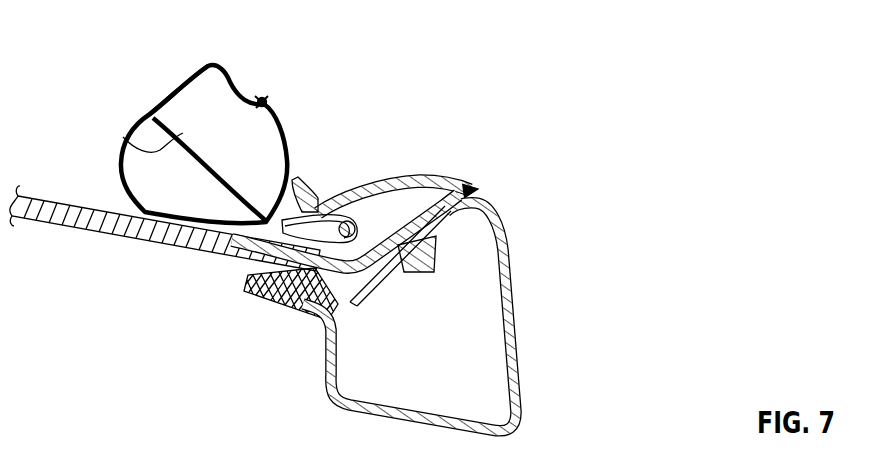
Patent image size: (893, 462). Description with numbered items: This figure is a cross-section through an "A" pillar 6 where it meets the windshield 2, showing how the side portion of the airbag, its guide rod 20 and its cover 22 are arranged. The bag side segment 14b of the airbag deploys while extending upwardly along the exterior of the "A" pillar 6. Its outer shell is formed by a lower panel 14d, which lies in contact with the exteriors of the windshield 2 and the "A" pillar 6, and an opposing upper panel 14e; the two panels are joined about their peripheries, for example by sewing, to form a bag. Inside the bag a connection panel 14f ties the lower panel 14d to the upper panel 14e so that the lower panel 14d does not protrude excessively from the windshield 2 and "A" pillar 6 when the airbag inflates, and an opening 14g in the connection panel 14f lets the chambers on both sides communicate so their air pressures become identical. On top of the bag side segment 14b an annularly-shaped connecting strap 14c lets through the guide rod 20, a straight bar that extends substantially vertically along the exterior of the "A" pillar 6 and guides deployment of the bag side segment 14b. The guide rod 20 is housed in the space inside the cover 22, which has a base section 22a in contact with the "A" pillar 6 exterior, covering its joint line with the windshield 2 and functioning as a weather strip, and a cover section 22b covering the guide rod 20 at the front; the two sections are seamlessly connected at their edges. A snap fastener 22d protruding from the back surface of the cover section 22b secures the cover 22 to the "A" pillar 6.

The windshield 2 is at (63, 223).
The "A" pillar 6 is at (516, 272).
The bag side segment 14b is at (218, 62).
The connecting strap 14c is at (343, 207).
The lower panel 14d is at (283, 124).
The upper panel 14e is at (189, 85).
The connection panel 14f is at (123, 138).
The opening 14g is at (210, 174).
The guide rod 20 is at (360, 290).
The cover 22 is at (402, 211).
The base section 22a is at (447, 188).
The cover section 22b is at (393, 178).
The snap fastener 22d is at (414, 273).